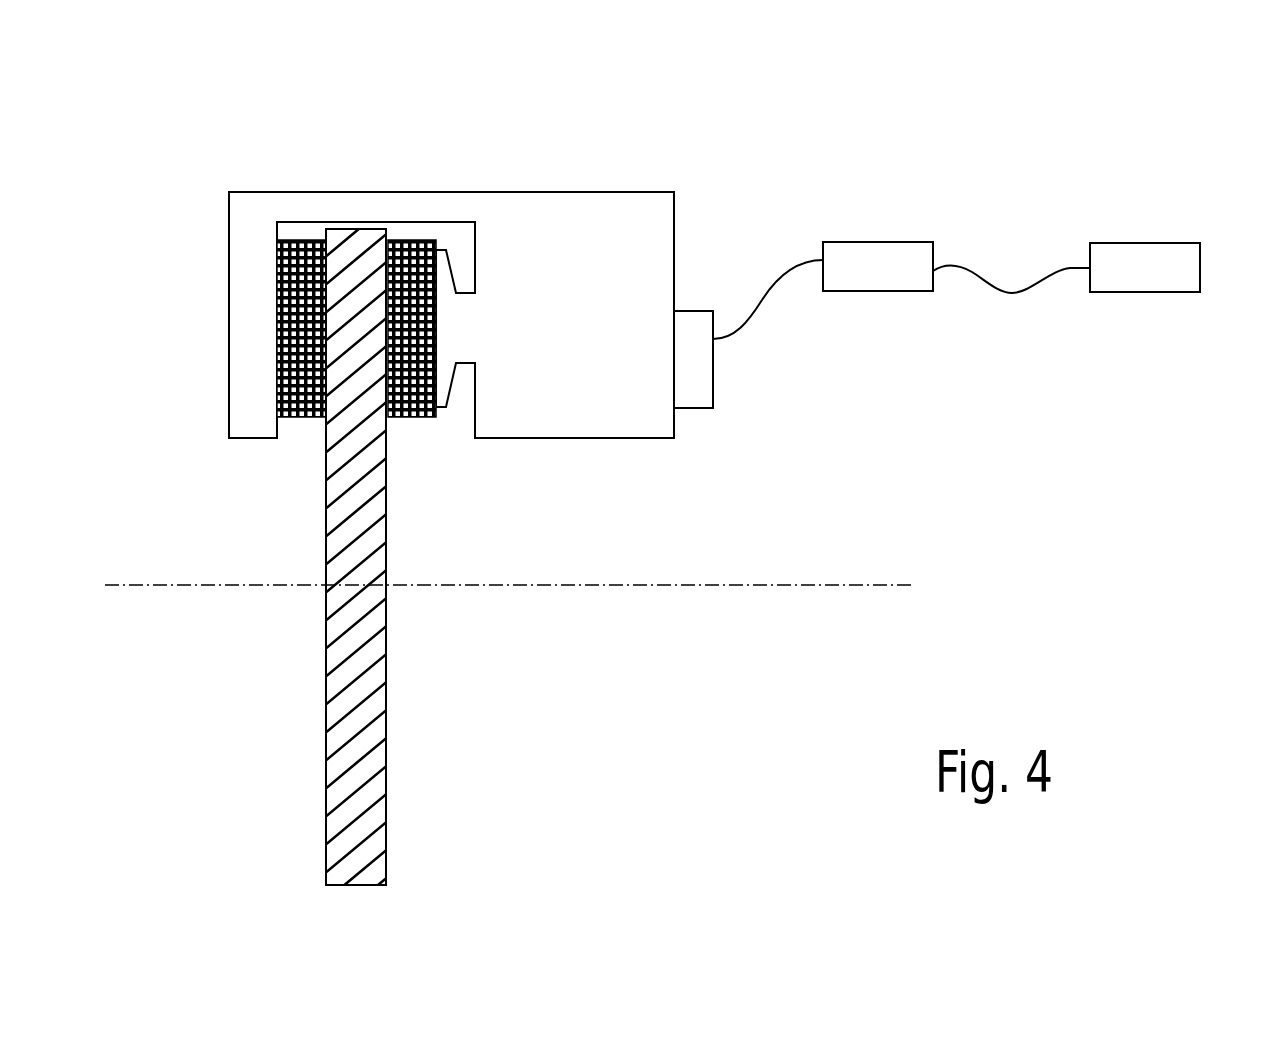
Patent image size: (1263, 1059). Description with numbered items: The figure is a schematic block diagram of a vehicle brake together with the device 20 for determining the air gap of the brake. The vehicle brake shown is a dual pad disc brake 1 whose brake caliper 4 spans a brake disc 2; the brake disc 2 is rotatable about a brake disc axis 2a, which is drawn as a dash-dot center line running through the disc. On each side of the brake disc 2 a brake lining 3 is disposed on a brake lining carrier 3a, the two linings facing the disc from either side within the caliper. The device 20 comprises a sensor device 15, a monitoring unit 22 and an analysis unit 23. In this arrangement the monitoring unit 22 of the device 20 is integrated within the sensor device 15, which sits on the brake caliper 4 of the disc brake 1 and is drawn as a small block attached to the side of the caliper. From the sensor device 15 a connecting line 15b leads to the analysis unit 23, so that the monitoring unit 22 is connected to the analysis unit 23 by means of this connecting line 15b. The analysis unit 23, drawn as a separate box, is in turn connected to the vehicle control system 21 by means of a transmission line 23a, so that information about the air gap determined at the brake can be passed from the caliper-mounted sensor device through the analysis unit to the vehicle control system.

The disc brake 1 is at (280, 118).
The brake disc 2 is at (348, 258).
The brake disc axis 2a is at (225, 585).
The brake lining 3 is at (359, 284).
The brake lining carrier 3a is at (300, 265).
The brake caliper 4 is at (437, 207).
The sensor device 15 is at (700, 398).
The connecting line 15b is at (762, 300).
The device for determining the air gap 20 is at (935, 132).
The vehicle control system 21 is at (1142, 252).
The monitoring unit 22 is at (722, 409).
The analysis unit 23 is at (885, 251).
The transmission line 23a is at (1012, 293).